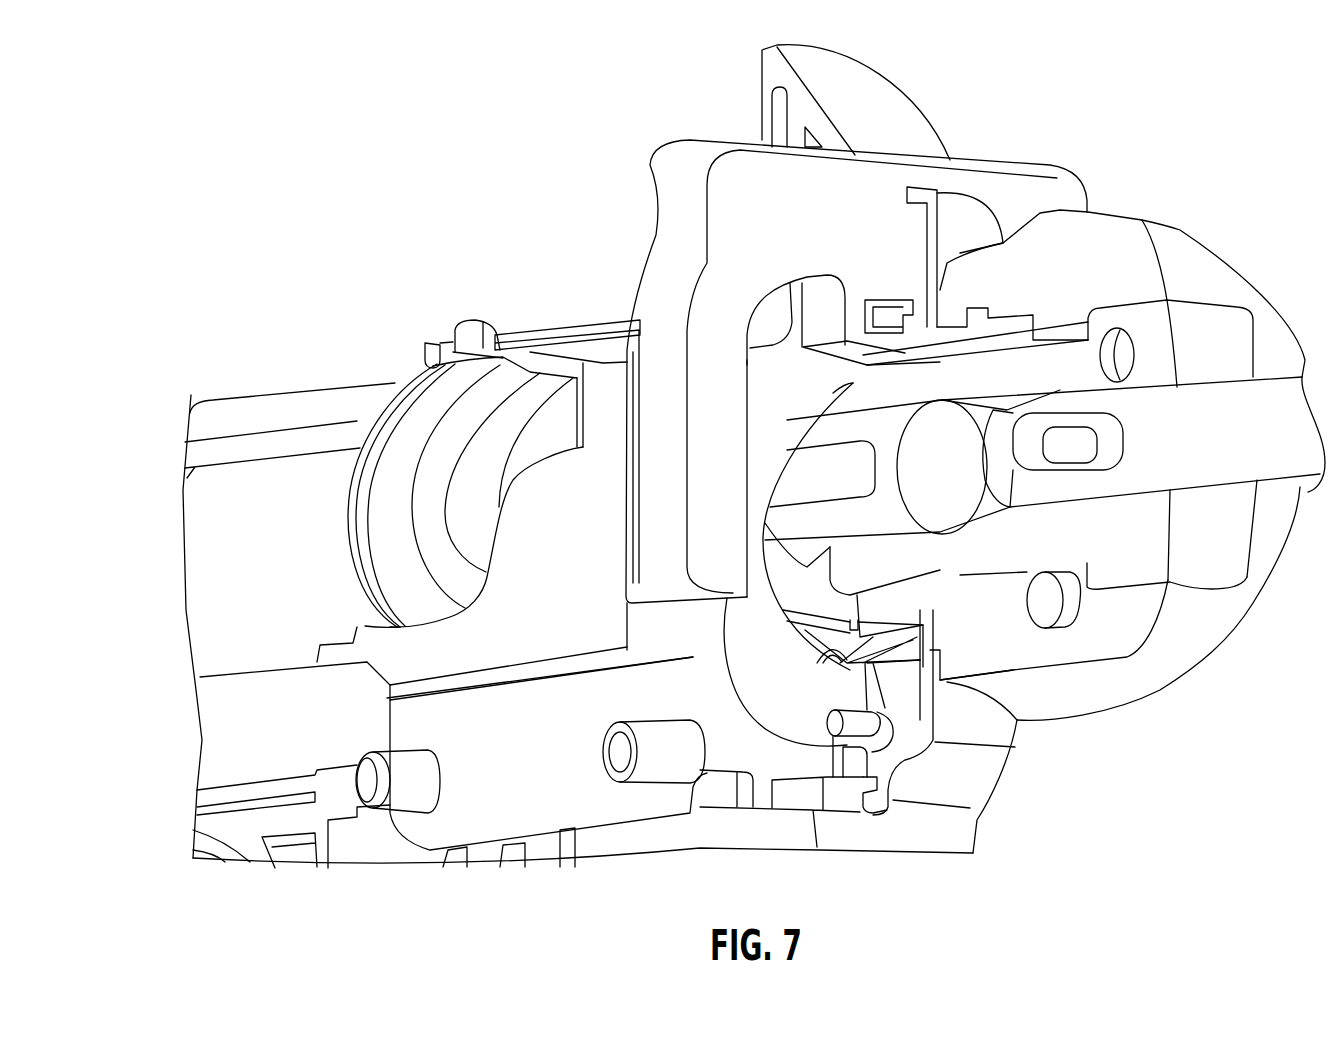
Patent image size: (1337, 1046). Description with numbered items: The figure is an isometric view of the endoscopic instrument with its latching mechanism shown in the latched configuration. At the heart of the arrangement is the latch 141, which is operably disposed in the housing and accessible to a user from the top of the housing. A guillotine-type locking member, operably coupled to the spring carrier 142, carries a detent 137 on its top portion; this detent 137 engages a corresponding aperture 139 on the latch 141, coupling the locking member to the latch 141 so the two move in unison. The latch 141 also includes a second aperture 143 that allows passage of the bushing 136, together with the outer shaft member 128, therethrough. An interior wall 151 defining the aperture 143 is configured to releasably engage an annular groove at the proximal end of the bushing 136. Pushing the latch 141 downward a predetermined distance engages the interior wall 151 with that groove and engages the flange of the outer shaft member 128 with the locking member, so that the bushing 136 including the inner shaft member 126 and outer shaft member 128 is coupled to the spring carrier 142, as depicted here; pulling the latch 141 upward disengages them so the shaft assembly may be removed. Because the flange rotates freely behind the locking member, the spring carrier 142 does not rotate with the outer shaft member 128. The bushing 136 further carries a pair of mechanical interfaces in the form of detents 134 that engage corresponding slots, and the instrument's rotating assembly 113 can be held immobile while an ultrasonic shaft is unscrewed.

The rotating assembly 113 is at (1100, 247).
The inner shaft member 126 is at (1217, 547).
The outer shaft member 128 is at (1270, 443).
The detent 134 is at (1077, 437).
The bushing 136 is at (1203, 333).
The detent 137 is at (882, 318).
The aperture 139 is at (863, 317).
The latch 141 is at (1013, 170).
The spring carrier 142 is at (447, 447).
The aperture 143 is at (783, 620).
The interior wall 151 is at (792, 437).